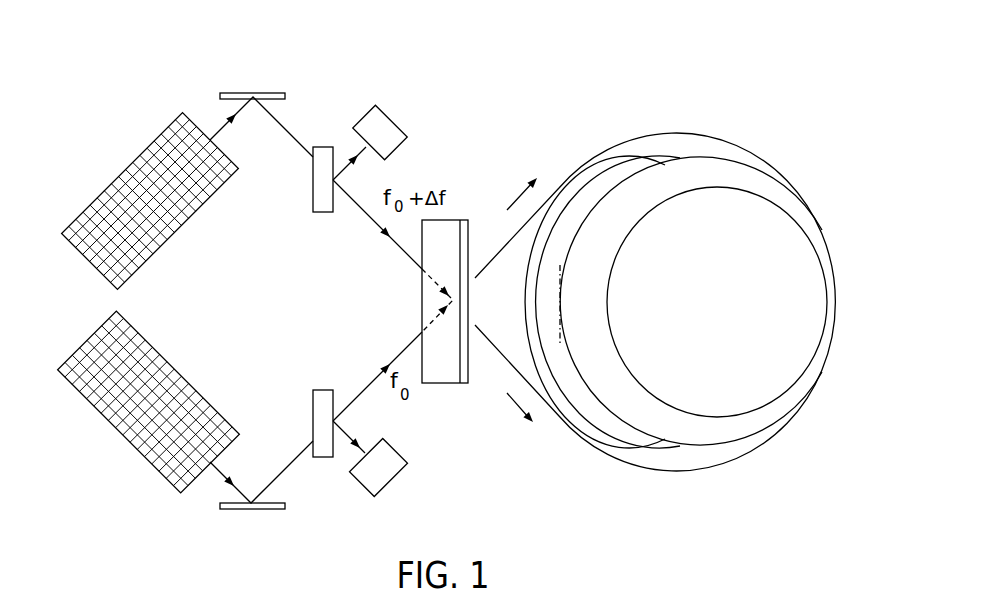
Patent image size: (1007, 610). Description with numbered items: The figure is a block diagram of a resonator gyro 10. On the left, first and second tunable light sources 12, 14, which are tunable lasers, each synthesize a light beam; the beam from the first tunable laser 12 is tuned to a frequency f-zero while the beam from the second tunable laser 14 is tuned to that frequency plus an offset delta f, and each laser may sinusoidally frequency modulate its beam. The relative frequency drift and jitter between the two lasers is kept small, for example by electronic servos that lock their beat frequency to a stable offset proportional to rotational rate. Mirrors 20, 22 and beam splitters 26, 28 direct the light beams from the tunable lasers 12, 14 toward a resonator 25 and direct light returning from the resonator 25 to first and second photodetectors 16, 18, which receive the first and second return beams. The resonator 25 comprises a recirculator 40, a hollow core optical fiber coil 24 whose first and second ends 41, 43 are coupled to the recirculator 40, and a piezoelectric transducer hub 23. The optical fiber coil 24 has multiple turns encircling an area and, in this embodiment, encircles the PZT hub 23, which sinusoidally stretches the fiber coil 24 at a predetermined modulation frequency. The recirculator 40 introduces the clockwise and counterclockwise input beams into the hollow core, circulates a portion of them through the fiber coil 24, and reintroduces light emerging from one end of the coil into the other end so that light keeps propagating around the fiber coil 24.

The resonator gyro 10 is at (575, 85).
The first tunable light source 12 is at (112, 423).
The second tunable light source 14 is at (112, 177).
The first photodetector 16 is at (397, 477).
The second photodetector 18 is at (397, 122).
The mirror 20 is at (262, 510).
The mirror 22 is at (262, 93).
The piezoelectric transducer hub 23 is at (701, 314).
The hollow core optical fiber coil 24 is at (712, 468).
The resonator 25 is at (733, 103).
The beam splitter 26 is at (313, 405).
The beam splitter 28 is at (313, 198).
The recirculator 40 is at (462, 407).
The first end of the optical fiber coil 41 is at (505, 324).
The second end of the optical fiber coil 43 is at (505, 279).